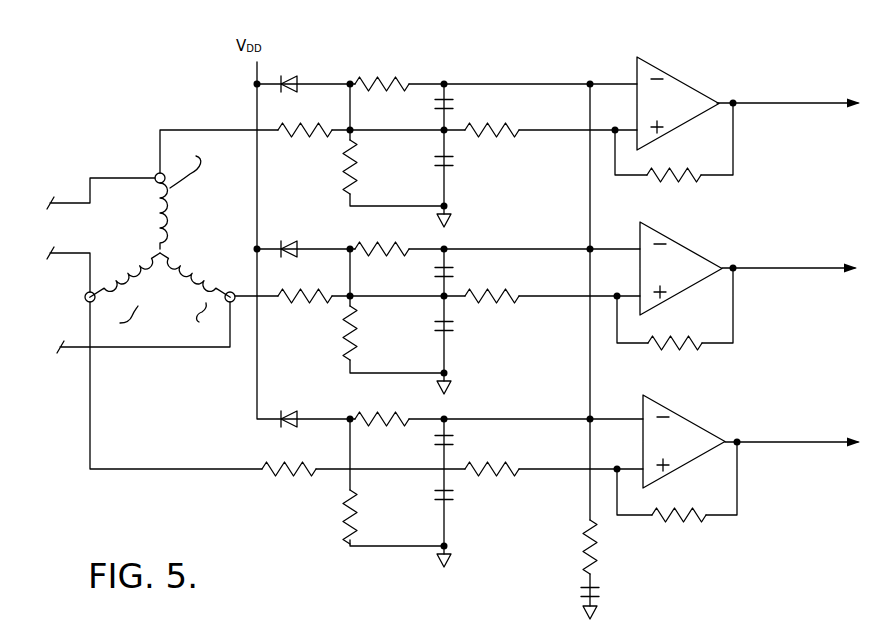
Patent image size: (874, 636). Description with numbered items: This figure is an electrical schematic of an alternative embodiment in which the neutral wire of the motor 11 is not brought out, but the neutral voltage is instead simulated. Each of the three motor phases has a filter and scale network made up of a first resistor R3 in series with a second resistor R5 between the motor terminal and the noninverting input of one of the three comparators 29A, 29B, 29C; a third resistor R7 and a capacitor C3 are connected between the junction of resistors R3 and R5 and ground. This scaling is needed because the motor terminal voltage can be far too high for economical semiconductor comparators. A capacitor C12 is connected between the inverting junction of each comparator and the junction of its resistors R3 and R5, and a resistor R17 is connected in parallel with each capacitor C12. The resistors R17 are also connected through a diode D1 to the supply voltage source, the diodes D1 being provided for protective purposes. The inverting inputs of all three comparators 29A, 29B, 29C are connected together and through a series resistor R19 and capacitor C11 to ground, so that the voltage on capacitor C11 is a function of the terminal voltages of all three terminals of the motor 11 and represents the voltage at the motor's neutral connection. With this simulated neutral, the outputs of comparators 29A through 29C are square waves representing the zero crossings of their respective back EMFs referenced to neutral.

The motor 11 is at (142, 235).
The comparator 29A is at (660, 72).
The comparator 29B is at (667, 244).
The comparator 29C is at (680, 423).
The diode D1 is at (290, 77).
The resistor R17 is at (399, 75).
The first resistor R3 is at (298, 120).
The third resistor R7 is at (345, 182).
The second resistor R5 is at (490, 119).
The capacitor C12 is at (434, 104).
The capacitor C3 is at (455, 157).
The series resistor R19 is at (604, 551).
The capacitor C11 is at (602, 592).